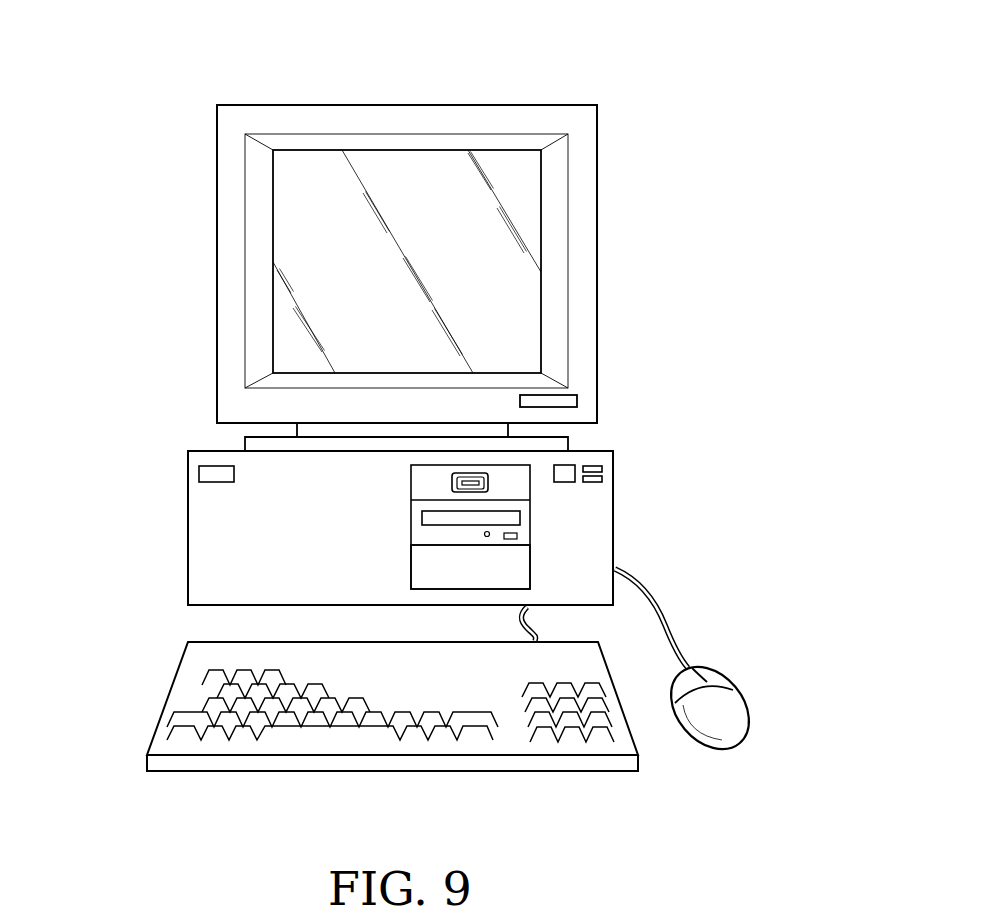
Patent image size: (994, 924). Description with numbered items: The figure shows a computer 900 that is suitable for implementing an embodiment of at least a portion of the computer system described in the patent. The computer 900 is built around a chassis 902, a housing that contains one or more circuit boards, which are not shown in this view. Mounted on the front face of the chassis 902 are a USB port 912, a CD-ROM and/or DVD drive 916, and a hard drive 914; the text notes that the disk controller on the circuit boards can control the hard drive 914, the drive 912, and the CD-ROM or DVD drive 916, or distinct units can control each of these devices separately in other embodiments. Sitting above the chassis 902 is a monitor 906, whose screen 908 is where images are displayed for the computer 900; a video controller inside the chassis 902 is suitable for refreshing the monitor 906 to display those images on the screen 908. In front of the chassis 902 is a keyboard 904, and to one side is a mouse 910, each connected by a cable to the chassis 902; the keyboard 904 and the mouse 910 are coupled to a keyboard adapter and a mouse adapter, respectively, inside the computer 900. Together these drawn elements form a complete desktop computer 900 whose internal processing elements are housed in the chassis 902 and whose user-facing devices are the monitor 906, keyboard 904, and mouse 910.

The computer 900 is at (590, 78).
The chassis 902 is at (188, 530).
The keyboard 904 is at (167, 697).
The monitor 906 is at (292, 105).
The screen 908 is at (322, 267).
The mouse 910 is at (728, 698).
The USB port 912 is at (488, 480).
The hard drive 914 is at (520, 565).
The CD-ROM and/or DVD drive 916 is at (520, 524).